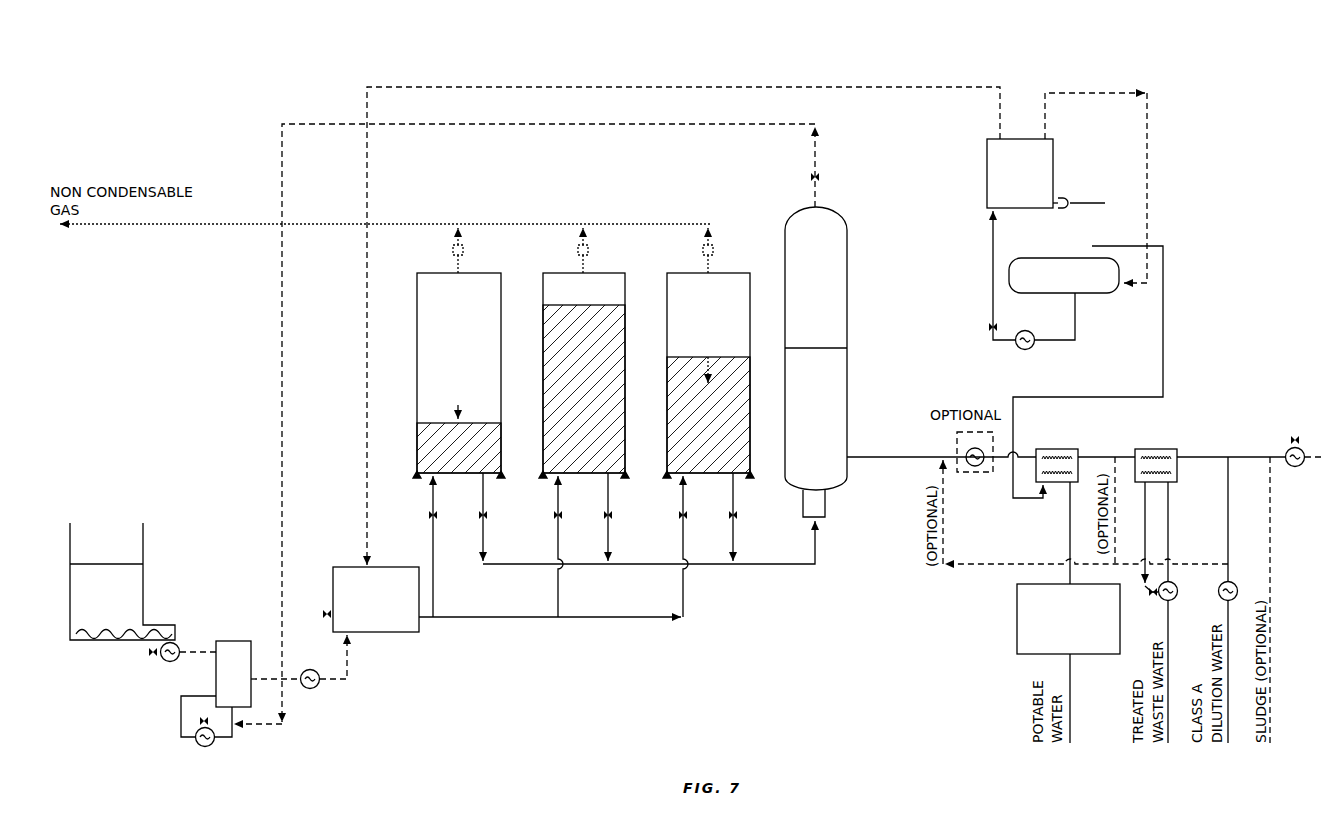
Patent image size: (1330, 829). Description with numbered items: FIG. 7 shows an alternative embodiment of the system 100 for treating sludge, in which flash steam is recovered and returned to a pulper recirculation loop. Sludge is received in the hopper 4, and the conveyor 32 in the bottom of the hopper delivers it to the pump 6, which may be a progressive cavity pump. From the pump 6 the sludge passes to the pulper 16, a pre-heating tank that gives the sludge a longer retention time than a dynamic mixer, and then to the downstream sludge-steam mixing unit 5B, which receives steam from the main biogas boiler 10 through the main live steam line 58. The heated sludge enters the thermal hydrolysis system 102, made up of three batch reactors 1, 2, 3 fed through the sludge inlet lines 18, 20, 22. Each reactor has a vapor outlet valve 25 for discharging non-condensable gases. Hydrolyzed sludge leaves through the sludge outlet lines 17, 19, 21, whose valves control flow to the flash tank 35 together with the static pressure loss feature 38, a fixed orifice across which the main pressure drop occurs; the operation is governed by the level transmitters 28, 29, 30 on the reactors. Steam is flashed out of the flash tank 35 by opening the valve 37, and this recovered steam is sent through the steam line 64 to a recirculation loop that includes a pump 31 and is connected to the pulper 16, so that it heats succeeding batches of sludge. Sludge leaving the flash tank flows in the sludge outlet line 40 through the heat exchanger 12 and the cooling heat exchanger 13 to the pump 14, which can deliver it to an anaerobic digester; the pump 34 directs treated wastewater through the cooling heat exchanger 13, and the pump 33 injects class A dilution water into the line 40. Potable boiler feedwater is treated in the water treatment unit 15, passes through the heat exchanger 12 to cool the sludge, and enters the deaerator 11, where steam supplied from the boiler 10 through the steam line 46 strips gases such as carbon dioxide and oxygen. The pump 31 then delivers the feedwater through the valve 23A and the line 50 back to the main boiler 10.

The system for treating sludge 100 is at (308, 52).
The thermal hydrolysis system 102 is at (526, 200).
The main live steam line 58 is at (880, 87).
The steam line 64 is at (668, 124).
The valve 37 is at (804, 179).
The flash tank 35 is at (816, 348).
The static pressure loss feature 38 is at (852, 521).
The main boiler 10 is at (1055, 173).
The line 50 is at (995, 235).
The valve 23A is at (976, 328).
The pump 31 is at (628, 528).
The deaerator 11 is at (1064, 266).
The steam line 46 is at (1150, 203).
The vapor outlet valve 25 is at (386, 248).
The batch reactor 3 is at (459, 375).
The batch reactor 2 is at (584, 375).
The batch reactor 1 is at (708, 375).
The level transmitter 30 is at (459, 545).
The level transmitter 29 is at (585, 545).
The level transmitter 28 is at (709, 545).
The sludge inlet line 22 is at (418, 518).
The sludge outlet line 21 is at (469, 518).
The sludge inlet line 20 is at (544, 518).
The sludge outlet line 19 is at (595, 518).
The sludge inlet line 18 is at (669, 518).
The sludge outlet line 17 is at (719, 518).
The sludge-steam mixing unit 5B is at (371, 589).
The hopper 4 is at (122, 581).
The conveyor 32 is at (115, 657).
The pump 6 is at (164, 665).
The pulper 16 is at (231, 662).
The heat exchanger 12 is at (1069, 460).
The cooling heat exchanger 13 is at (1169, 455).
The sludge outlet line 40 is at (1218, 457).
The pump 14 is at (1131, 464).
The water treatment unit 15 is at (1068, 612).
The pump 34 is at (1175, 612).
The pump 33 is at (1237, 600).